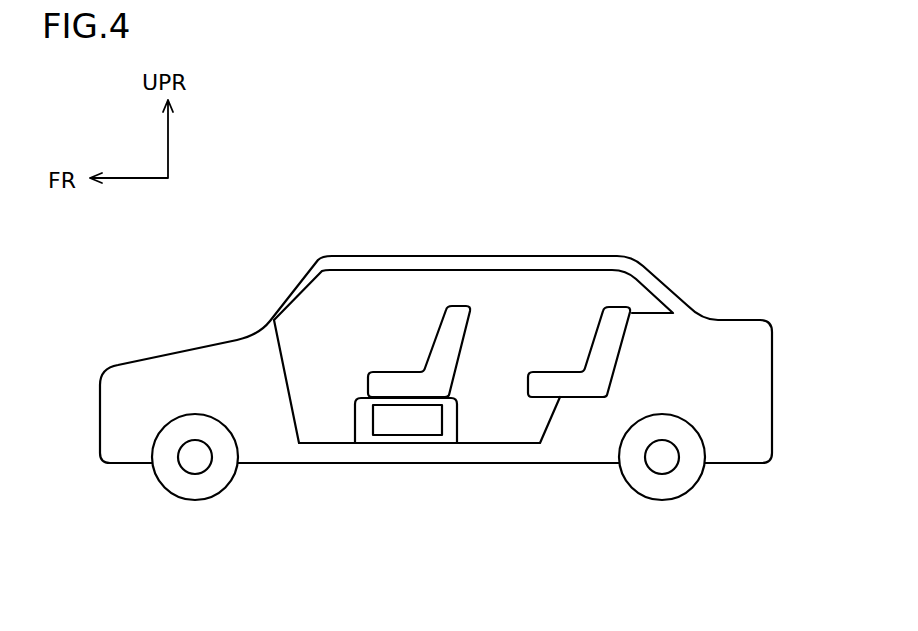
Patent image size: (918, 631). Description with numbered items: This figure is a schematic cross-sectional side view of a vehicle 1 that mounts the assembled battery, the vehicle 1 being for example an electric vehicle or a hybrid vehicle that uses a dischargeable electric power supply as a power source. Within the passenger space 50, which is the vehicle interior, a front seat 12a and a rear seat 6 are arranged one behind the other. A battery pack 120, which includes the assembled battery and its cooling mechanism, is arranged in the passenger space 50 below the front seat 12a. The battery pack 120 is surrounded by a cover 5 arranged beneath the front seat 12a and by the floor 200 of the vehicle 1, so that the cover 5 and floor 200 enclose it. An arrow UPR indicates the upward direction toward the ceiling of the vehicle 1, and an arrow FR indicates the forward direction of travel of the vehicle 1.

The vehicle 1 is at (186, 266).
The cover 5 is at (457, 427).
The rear seat 6 is at (560, 372).
The front seat 12a is at (405, 383).
The passenger space 50 is at (513, 303).
The battery pack 120 is at (408, 422).
The floor 200 is at (340, 442).